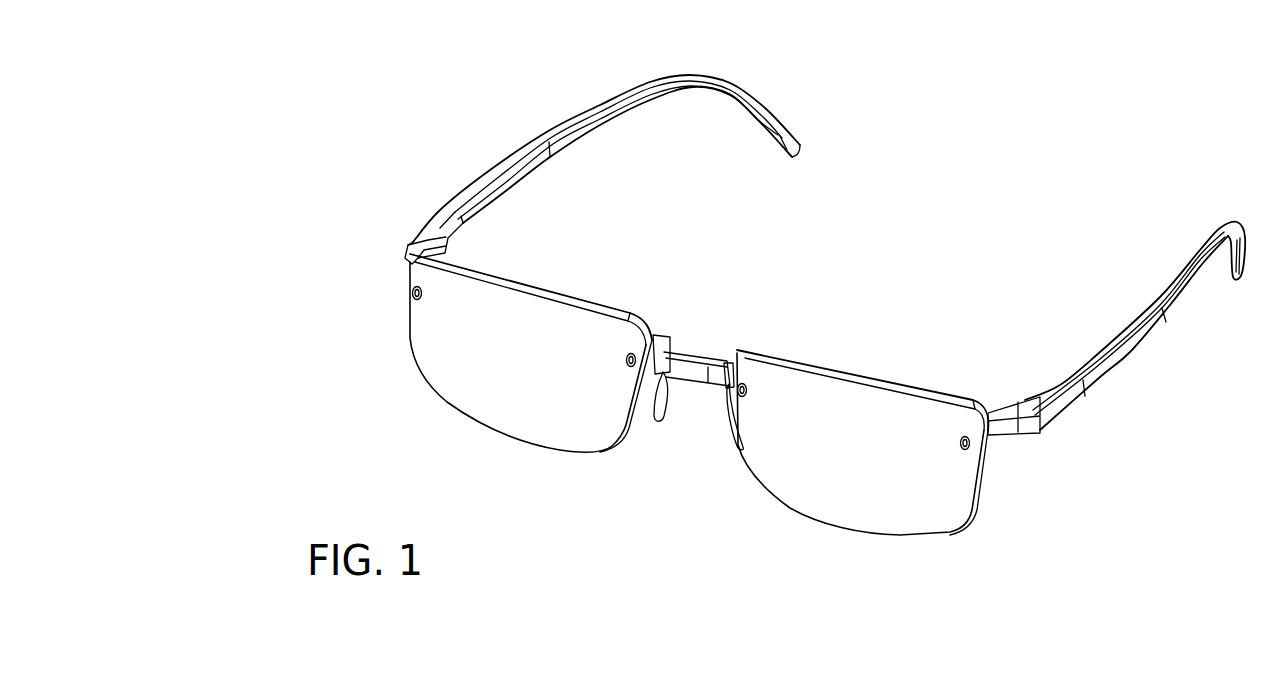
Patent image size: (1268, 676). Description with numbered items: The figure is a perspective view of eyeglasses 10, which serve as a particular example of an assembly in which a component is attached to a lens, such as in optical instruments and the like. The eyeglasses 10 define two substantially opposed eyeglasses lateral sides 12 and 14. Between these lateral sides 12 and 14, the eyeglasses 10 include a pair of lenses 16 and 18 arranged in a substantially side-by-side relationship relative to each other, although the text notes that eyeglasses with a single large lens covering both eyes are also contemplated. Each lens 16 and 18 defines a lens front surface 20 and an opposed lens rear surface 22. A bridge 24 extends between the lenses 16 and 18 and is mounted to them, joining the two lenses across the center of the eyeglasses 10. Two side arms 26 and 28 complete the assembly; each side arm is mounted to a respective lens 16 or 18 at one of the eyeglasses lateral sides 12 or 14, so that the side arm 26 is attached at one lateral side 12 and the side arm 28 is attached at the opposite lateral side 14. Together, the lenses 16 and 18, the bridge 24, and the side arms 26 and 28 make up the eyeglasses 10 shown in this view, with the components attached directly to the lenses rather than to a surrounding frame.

The eyeglasses 10 is at (322, 90).
The eyeglasses lateral side 12 is at (407, 325).
The eyeglasses lateral side 14 is at (982, 488).
The lens 16 is at (539, 278).
The lens 18 is at (845, 365).
The lens front surface 20 is at (445, 377).
The lens rear surface 22 is at (582, 293).
The bridge 24 is at (692, 347).
The side arm 26 is at (485, 160).
The side arm 28 is at (1127, 320).